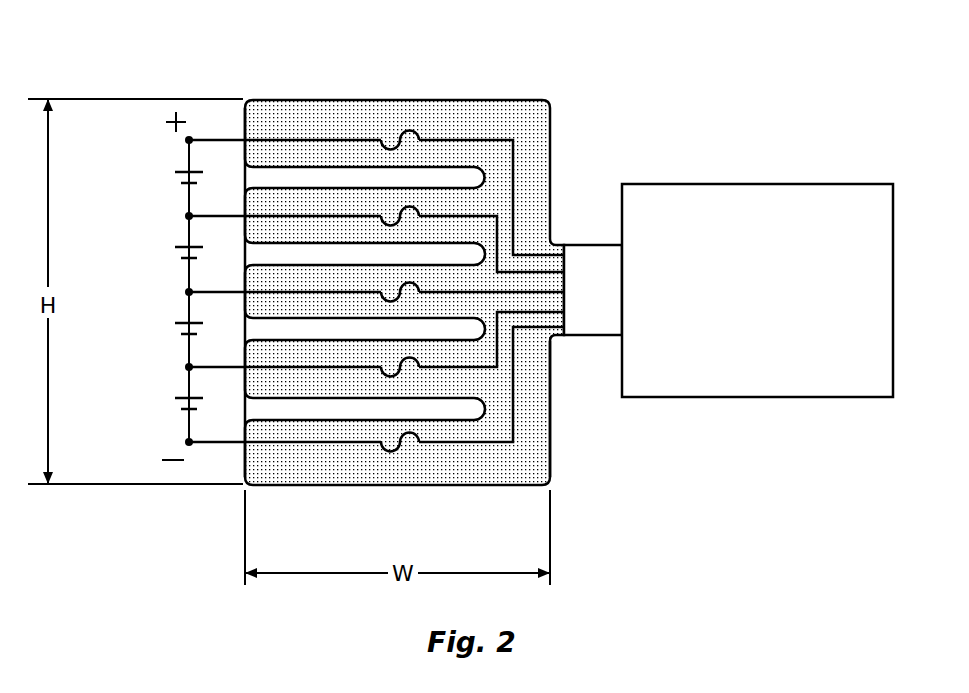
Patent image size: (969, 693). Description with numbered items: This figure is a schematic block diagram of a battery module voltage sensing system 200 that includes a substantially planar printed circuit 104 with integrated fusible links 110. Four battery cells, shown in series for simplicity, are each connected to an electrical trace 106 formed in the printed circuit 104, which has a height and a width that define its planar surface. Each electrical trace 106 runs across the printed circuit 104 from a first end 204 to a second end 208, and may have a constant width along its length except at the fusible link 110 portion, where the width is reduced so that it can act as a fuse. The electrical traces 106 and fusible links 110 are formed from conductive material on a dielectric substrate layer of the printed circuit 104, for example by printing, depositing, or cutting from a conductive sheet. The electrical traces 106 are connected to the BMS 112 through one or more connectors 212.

The battery module voltage sensing system 200 is at (801, 86).
The printed circuit 104 is at (477, 100).
The electrical trace 106 is at (285, 137).
The fusible link 110 is at (402, 128).
The BMS 112 is at (710, 183).
The connector 212 is at (590, 346).
The first end 204 is at (235, 499).
The second end 208 is at (563, 488).